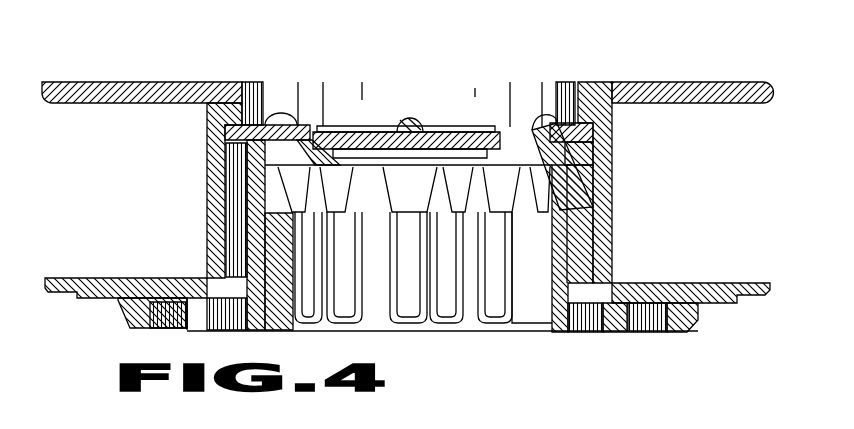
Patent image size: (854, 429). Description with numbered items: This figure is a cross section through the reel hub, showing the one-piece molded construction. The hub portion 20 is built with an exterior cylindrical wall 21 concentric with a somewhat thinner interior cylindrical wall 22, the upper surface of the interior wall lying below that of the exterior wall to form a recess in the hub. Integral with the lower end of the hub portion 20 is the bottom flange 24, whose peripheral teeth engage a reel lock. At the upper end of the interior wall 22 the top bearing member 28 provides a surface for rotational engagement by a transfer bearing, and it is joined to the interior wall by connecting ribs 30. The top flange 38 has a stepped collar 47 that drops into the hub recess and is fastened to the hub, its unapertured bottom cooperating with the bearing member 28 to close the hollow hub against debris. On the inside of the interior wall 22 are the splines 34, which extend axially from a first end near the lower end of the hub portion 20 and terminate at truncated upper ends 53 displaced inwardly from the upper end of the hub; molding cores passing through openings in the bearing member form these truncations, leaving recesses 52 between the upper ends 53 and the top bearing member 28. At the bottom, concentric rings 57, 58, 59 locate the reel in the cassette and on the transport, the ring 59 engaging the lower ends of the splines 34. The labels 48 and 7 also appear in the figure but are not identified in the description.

The hub portion 20 is at (614, 229).
The exterior cylindrical wall 21 is at (603, 148).
The interior cylindrical wall 22 is at (250, 215).
The bottom flange 24 is at (707, 283).
The top bearing member 28 is at (373, 128).
The connecting ribs 30 is at (255, 126).
The splines 34 is at (452, 302).
The top flange 38 is at (690, 83).
The collar 47 is at (566, 98).
The plate edge 48 is at (496, 127).
The recesses 52 is at (421, 196).
The truncated upper ends 53 is at (447, 205).
The ring 57 is at (673, 321).
The ring 58 is at (618, 333).
The ring 59 is at (557, 333).
The cavity 7 is at (553, 222).